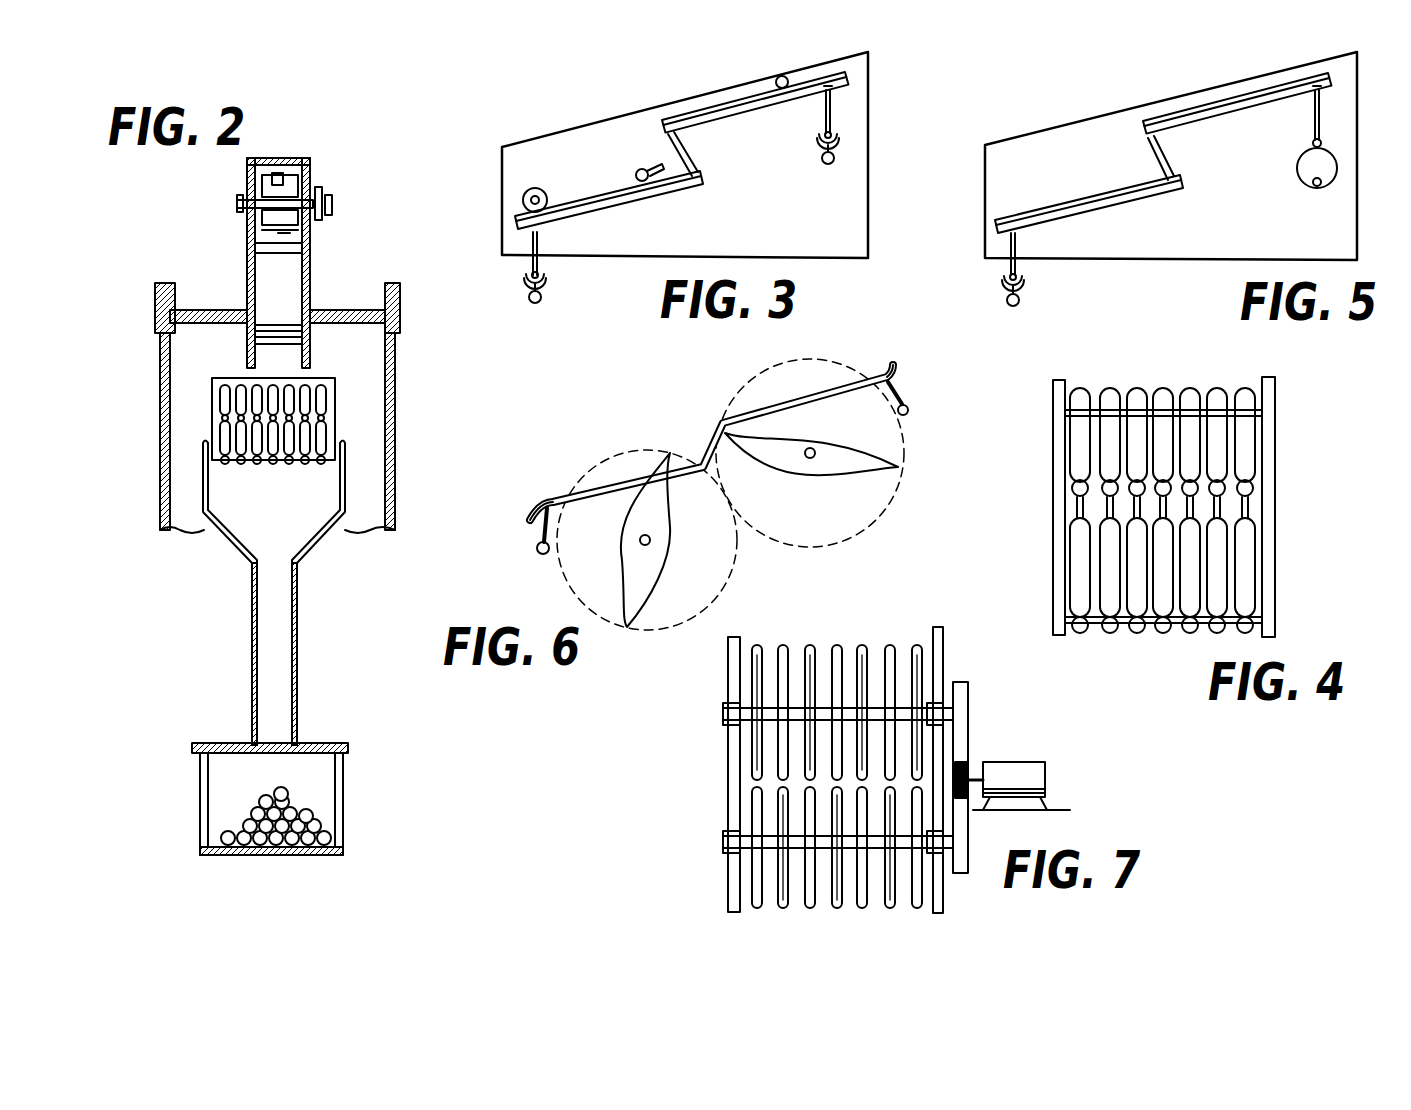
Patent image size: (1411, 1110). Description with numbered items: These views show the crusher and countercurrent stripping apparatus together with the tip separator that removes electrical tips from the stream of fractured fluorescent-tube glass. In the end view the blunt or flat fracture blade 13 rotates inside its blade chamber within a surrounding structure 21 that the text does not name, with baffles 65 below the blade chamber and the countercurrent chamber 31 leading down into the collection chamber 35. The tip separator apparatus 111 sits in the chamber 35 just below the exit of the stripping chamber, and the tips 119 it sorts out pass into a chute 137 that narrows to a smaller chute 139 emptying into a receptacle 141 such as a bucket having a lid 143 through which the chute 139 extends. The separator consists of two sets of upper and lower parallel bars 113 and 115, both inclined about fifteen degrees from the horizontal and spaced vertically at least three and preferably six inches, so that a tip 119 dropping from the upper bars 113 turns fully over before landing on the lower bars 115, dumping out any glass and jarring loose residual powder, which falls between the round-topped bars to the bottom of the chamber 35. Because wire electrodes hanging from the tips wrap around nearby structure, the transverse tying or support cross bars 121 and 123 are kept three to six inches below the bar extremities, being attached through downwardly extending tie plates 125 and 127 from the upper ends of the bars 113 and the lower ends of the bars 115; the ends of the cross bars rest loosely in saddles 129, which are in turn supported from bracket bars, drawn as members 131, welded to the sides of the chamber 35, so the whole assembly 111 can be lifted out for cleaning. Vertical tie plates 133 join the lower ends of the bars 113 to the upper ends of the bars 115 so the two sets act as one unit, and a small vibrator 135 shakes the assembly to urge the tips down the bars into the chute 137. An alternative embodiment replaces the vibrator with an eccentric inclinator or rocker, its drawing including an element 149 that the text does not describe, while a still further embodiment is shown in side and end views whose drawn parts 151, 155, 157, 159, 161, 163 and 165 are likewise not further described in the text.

In FIG. 2, the fracture blade 13 is at (262, 185).
In FIG. 2, the housing tube 21 is at (312, 172).
In FIG. 2, the countercurrent chamber 31 is at (270, 280).
In FIG. 2, the collection chamber 35 is at (190, 373).
In FIG. 2, the baffles 65 is at (288, 317).
In FIG. 2, the tip separator apparatus 111 is at (315, 398).
In FIG. 3, the upper parallel bars 113 is at (690, 110).
In FIG. 5, the upper parallel bars 113 is at (1228, 108).
In FIG. 4, the upper parallel bars 113 is at (1218, 395).
In FIG. 3, the lower parallel bars 115 is at (606, 197).
In FIG. 5, the lower parallel bars 115 is at (1108, 195).
In FIG. 4, the lower parallel bars 115 is at (1213, 568).
In FIG. 3, the tips 119 is at (778, 78).
In FIG. 3, the cross bar 121 is at (836, 135).
In FIG. 5, the cross bar 121 is at (1312, 143).
In FIG. 6, the cross bar 121 is at (909, 412).
In FIG. 4, the cross bar 121 is at (1232, 400).
In FIG. 3, the cross bar 123 is at (528, 276).
In FIG. 5, the cross bar 123 is at (1020, 278).
In FIG. 6, the cross bar 123 is at (538, 555).
In FIG. 4, the cross bar 123 is at (1120, 630).
In FIG. 3, the tie plate 125 is at (848, 82).
In FIG. 5, the tie plate 125 is at (1335, 90).
In FIG. 6, the tie plate 125 is at (898, 390).
In FIG. 3, the tie plate 127 is at (543, 245).
In FIG. 5, the tie plate 127 is at (1020, 246).
In FIG. 6, the tie plate 127 is at (540, 528).
In FIG. 3, the saddles 129 is at (548, 286).
In FIG. 5, the saddles 129 is at (1002, 287).
In FIG. 3, the ball 131 is at (540, 303).
In FIG. 5, the ball 131 is at (1013, 306).
In FIG. 3, the tie plates 133 is at (700, 150).
In FIG. 5, the tie plates 133 is at (1172, 158).
In FIG. 4, the tie plates 133 is at (1252, 507).
In FIG. 3, the vibrator 135 is at (538, 190).
In FIG. 2, the chute 137 is at (292, 510).
In FIG. 2, the smaller chute 139 is at (297, 625).
In FIG. 2, the receptacle 141 is at (343, 790).
In FIG. 2, the lid 143 is at (318, 745).
In FIG. 5, the weight ball 149 is at (1298, 178).
In FIG. 6, the upper rod end 151 is at (890, 368).
In FIG. 7, the upper rod end 151 is at (868, 643).
In FIG. 6, the lower rod end 155 is at (556, 498).
In FIG. 7, the lower rod end 155 is at (790, 870).
In FIG. 6, the offset rod 157 is at (703, 445).
In FIG. 7, the offset rod 157 is at (752, 773).
In FIG. 6, the upper cam blade 159 is at (812, 460).
In FIG. 7, the upper cam blade 159 is at (902, 647).
In FIG. 6, the lower cam blade 161 is at (662, 568).
In FIG. 7, the lower cam blade 161 is at (772, 805).
In FIG. 7, the motor 163 is at (1015, 768).
In FIG. 7, the crank 165 is at (968, 758).